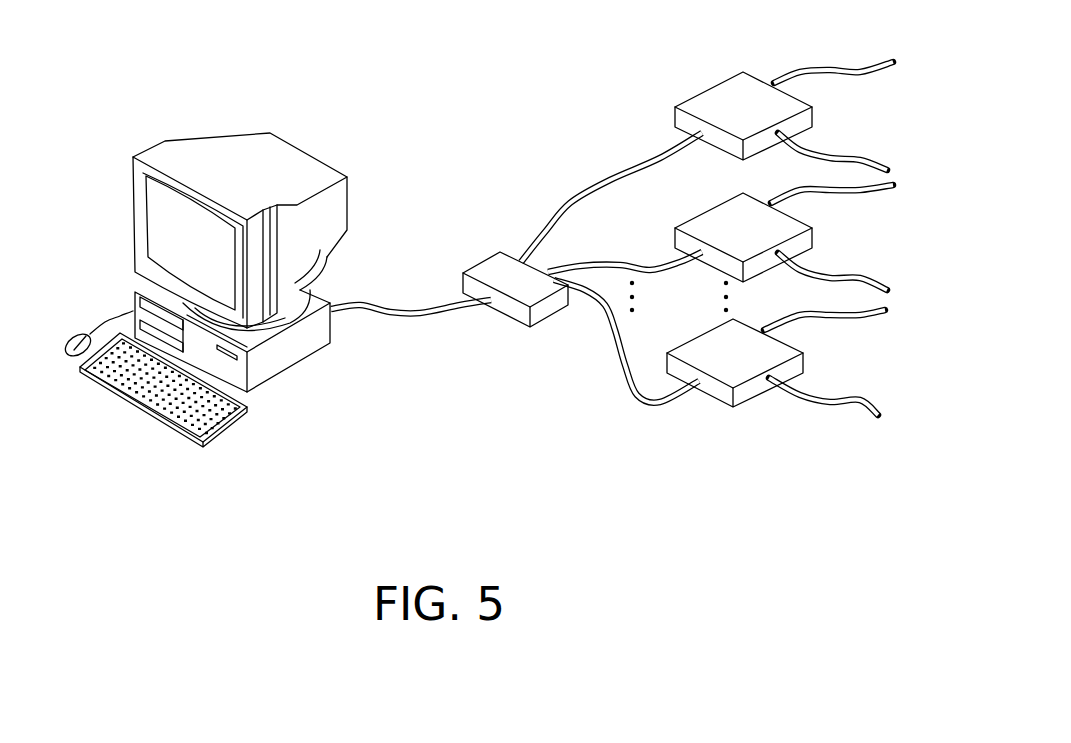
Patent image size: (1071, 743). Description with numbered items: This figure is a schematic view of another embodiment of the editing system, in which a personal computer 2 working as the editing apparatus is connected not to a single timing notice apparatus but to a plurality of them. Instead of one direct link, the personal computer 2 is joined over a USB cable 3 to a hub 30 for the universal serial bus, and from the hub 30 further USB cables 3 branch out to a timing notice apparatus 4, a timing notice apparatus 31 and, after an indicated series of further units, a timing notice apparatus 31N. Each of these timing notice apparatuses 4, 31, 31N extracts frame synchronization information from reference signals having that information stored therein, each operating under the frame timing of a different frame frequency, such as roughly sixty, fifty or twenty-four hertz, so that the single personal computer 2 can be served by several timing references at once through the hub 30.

The personal computer 2 is at (313, 168).
The USB cable 3 is at (570, 198).
The timing notice apparatus 4 is at (720, 82).
The hub 30 is at (522, 315).
The timing notice apparatus 31 is at (707, 263).
The timing notice apparatus 31N is at (728, 397).